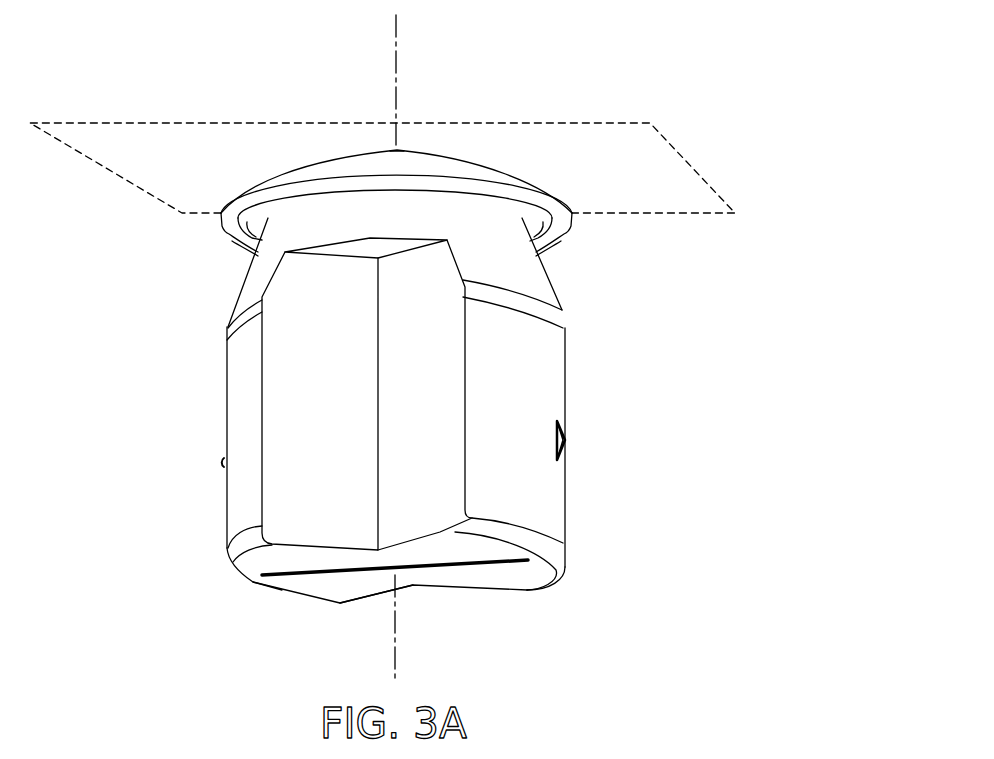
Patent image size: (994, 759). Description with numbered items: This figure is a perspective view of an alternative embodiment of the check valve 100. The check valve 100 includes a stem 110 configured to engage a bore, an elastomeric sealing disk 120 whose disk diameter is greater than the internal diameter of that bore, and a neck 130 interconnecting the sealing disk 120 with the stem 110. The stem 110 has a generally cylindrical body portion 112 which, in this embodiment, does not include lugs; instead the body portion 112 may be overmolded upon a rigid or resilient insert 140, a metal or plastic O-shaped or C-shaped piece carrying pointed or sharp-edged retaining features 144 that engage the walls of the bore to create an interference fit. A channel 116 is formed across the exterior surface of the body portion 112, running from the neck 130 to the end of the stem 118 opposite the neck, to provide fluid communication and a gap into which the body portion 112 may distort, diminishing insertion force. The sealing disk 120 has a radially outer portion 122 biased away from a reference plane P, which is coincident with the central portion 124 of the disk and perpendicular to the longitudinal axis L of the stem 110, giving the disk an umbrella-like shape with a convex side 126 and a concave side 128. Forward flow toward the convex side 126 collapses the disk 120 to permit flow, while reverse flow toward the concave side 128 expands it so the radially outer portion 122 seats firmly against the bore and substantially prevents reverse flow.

The check valve 100 is at (739, 86).
The stem 110 is at (565, 485).
The generally cylindrical body portion 112 is at (227, 549).
The channel 116 is at (413, 586).
The end of the stem 118 is at (253, 580).
The elastomeric sealing disk 120 is at (467, 165).
The radially outer portion 122 is at (557, 240).
The central portion 124 is at (397, 150).
The convex side 126 is at (303, 178).
The concave side 128 is at (227, 233).
The neck 130 is at (231, 240).
The insert 140 is at (508, 562).
The retaining features 144 is at (566, 441).
The longitudinal axis L is at (406, 348).
The plane P is at (382, 168).